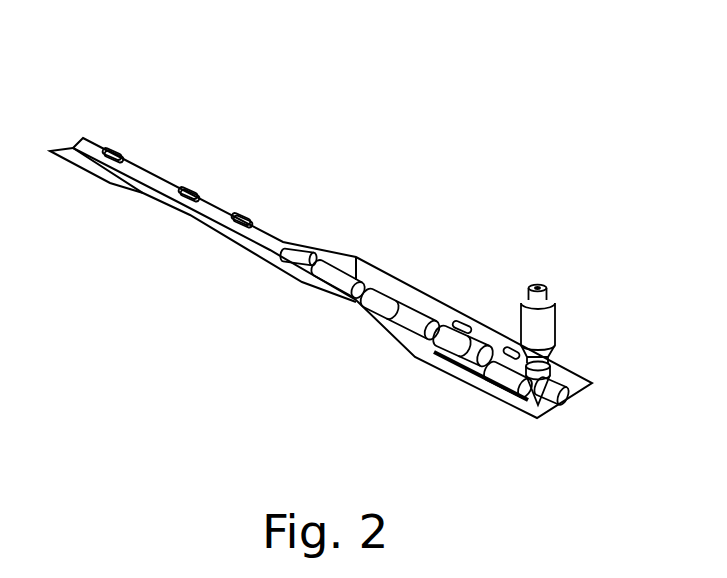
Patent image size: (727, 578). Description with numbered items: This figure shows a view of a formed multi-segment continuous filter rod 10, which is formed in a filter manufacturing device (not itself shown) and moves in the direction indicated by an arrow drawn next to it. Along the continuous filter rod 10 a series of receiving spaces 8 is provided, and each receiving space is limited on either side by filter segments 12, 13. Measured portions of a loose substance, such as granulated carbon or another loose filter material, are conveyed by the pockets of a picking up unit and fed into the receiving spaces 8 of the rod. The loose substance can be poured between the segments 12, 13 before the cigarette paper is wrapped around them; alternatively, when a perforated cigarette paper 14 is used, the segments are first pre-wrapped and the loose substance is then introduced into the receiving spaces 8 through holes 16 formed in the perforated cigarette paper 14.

The multi-segment continuous filter rod 10 is at (150, 140).
The receiving spaces 8 is at (322, 245).
The filter segment 12 is at (292, 259).
The filter segment 13 is at (333, 270).
The perforated cigarette paper 14 is at (563, 371).
The holes 16 is at (245, 218).